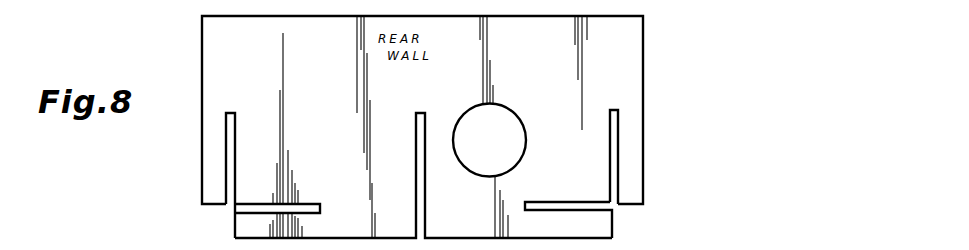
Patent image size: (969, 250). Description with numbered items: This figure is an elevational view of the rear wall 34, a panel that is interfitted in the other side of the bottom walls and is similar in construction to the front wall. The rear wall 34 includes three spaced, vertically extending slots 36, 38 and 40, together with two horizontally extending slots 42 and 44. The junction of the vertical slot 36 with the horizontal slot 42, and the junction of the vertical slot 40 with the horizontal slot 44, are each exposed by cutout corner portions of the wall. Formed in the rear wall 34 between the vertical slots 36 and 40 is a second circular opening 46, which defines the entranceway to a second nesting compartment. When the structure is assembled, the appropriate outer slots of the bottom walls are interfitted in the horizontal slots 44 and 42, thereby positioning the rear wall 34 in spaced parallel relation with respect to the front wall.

The rear wall 34 is at (628, 48).
The vertically extending slot 36 is at (235, 127).
The vertically extending slot 38 is at (429, 126).
The vertically extending slot 40 is at (608, 148).
The horizontally extending slot 42 is at (305, 202).
The horizontally extending slot 44 is at (552, 202).
The second circular opening 46 is at (512, 111).